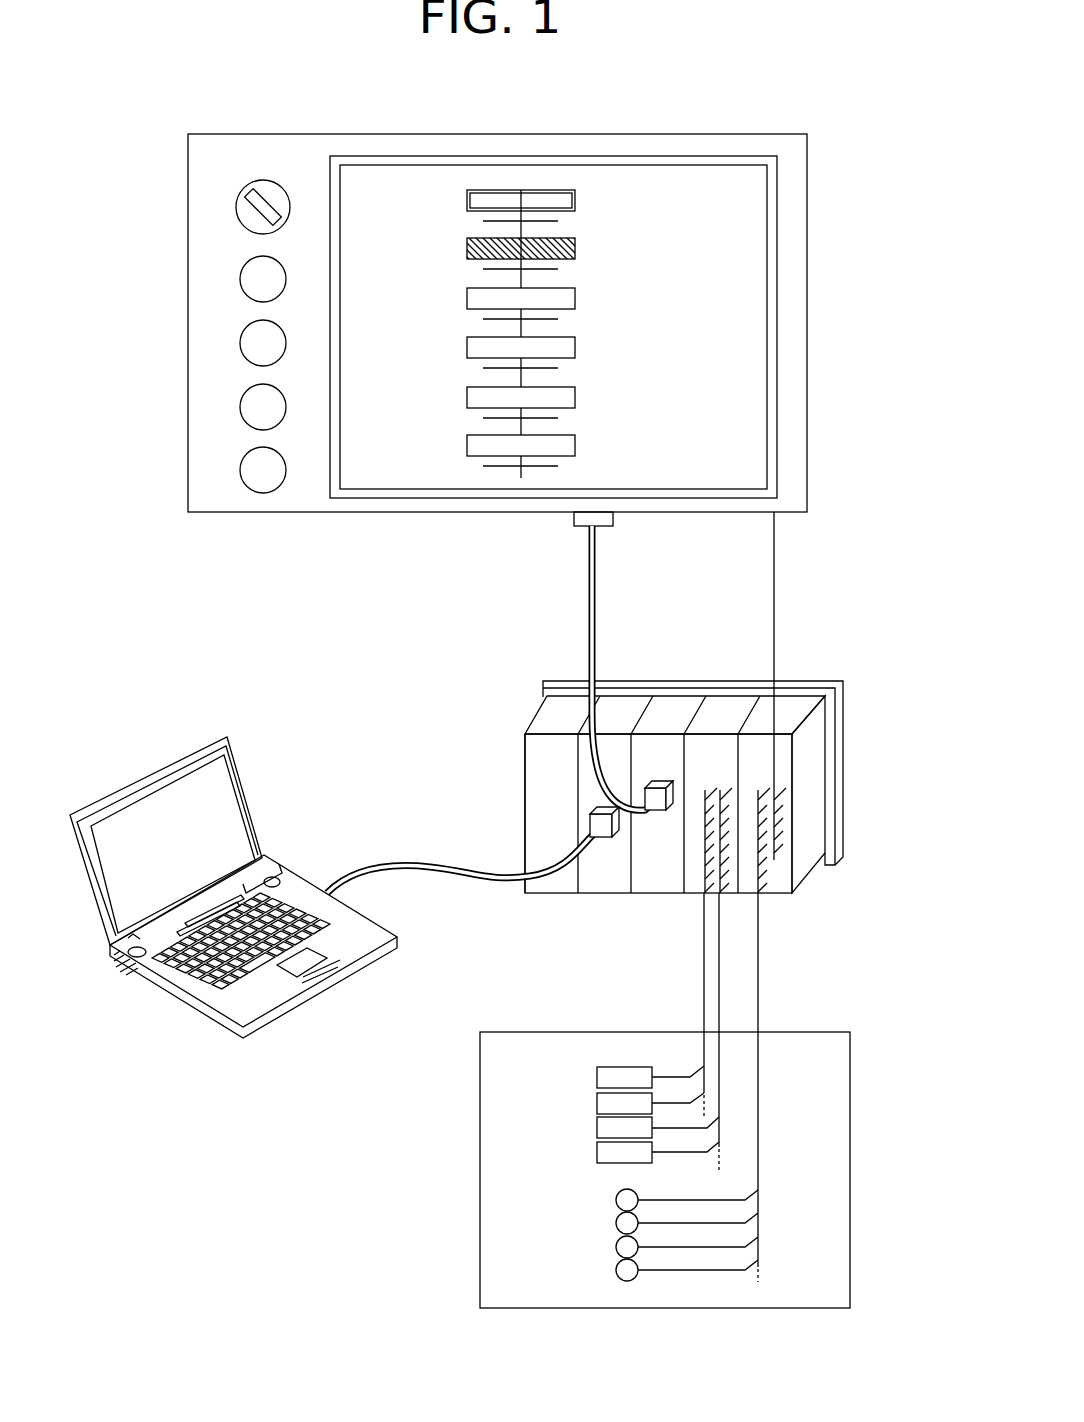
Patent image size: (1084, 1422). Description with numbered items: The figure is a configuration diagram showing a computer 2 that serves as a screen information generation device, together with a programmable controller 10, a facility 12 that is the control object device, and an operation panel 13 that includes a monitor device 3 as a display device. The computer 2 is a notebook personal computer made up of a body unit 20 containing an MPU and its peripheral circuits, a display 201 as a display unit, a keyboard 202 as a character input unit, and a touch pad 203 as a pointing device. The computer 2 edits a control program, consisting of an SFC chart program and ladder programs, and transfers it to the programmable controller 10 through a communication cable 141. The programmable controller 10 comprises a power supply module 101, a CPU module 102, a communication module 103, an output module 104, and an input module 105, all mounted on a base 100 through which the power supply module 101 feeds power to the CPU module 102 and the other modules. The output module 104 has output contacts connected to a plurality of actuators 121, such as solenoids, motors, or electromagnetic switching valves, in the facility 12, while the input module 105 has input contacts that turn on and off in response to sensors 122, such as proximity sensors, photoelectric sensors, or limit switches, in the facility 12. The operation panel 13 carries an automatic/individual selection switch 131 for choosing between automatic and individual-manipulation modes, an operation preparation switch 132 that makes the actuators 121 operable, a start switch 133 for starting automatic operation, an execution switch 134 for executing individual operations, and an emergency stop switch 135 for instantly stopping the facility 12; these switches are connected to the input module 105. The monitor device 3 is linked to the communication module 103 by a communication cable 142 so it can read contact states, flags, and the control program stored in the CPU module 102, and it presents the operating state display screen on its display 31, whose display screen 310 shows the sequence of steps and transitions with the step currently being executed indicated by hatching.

The computer 2 is at (233, 870).
The monitor device 3 is at (690, 148).
The programmable controller 10 is at (721, 702).
The facility 12 is at (665, 1100).
The operation panel 13 is at (343, 133).
The body unit 20 is at (150, 1004).
The display 31 is at (777, 216).
The base 100 is at (722, 702).
The power supply module 101 is at (563, 707).
The CPU module 102 is at (619, 707).
The communication module 103 is at (676, 707).
The output module 104 is at (728, 707).
The input module 105 is at (790, 707).
The actuators 121 is at (597, 1152).
The sensors 122 is at (616, 1270).
The automatic/individual selection switch 131 is at (236, 211).
The operation preparation switch 132 is at (240, 283).
The start switch 133 is at (240, 345).
The execution switch 134 is at (240, 410).
The emergency stop switch 135 is at (240, 473).
The communication cable 141 is at (427, 862).
The communication cable 142 is at (597, 585).
The display 201 is at (208, 791).
The keyboard 202 is at (258, 894).
The touch pad 203 is at (303, 950).
The display screen 310 is at (759, 267).